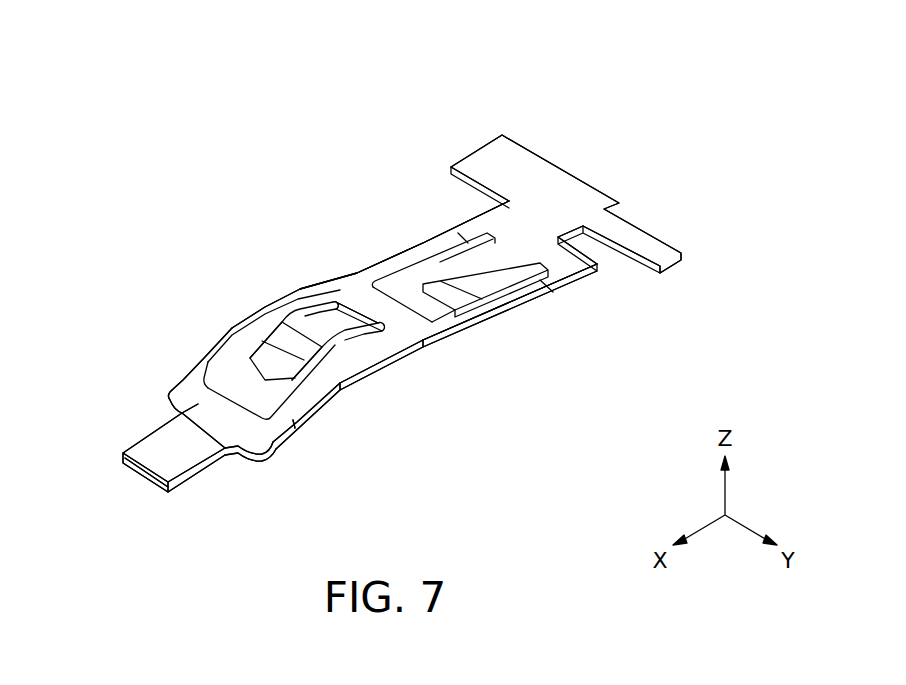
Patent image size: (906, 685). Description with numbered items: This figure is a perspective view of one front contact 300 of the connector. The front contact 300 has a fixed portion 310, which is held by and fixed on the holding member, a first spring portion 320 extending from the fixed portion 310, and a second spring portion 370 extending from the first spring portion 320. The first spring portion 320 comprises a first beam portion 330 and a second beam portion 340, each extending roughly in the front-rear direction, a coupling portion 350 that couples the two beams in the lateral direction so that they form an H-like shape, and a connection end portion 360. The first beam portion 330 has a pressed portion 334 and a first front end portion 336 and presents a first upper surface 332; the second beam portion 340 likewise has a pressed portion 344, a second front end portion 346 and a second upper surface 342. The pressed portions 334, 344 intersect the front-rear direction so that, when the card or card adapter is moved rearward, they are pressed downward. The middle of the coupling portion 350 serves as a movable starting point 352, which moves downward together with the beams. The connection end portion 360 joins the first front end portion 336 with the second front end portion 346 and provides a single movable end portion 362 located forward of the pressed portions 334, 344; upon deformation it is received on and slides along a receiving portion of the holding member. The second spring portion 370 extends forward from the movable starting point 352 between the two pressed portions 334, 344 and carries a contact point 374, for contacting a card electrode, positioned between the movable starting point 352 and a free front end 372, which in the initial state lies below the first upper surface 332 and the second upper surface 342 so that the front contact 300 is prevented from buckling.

The front contact 300 is at (527, 120).
The fixed portion 310 is at (527, 242).
The first spring portion 320 is at (447, 260).
The first beam portion 330 is at (425, 250).
The second beam portion 340 is at (500, 307).
The coupling portion 350 is at (358, 302).
The movable starting point 352 is at (373, 313).
The first upper surface 332 is at (220, 335).
The pressed portion 334 is at (207, 360).
The first front end portion 336 is at (168, 390).
The second upper surface 342 is at (333, 398).
The pressed portion 344 is at (293, 418).
The second front end portion 346 is at (257, 457).
The connection end portion 360 is at (182, 413).
The movable end portion 362 is at (172, 460).
The second spring portion 370 is at (251, 270).
The front end 372 is at (267, 380).
The contact point 374 is at (282, 322).